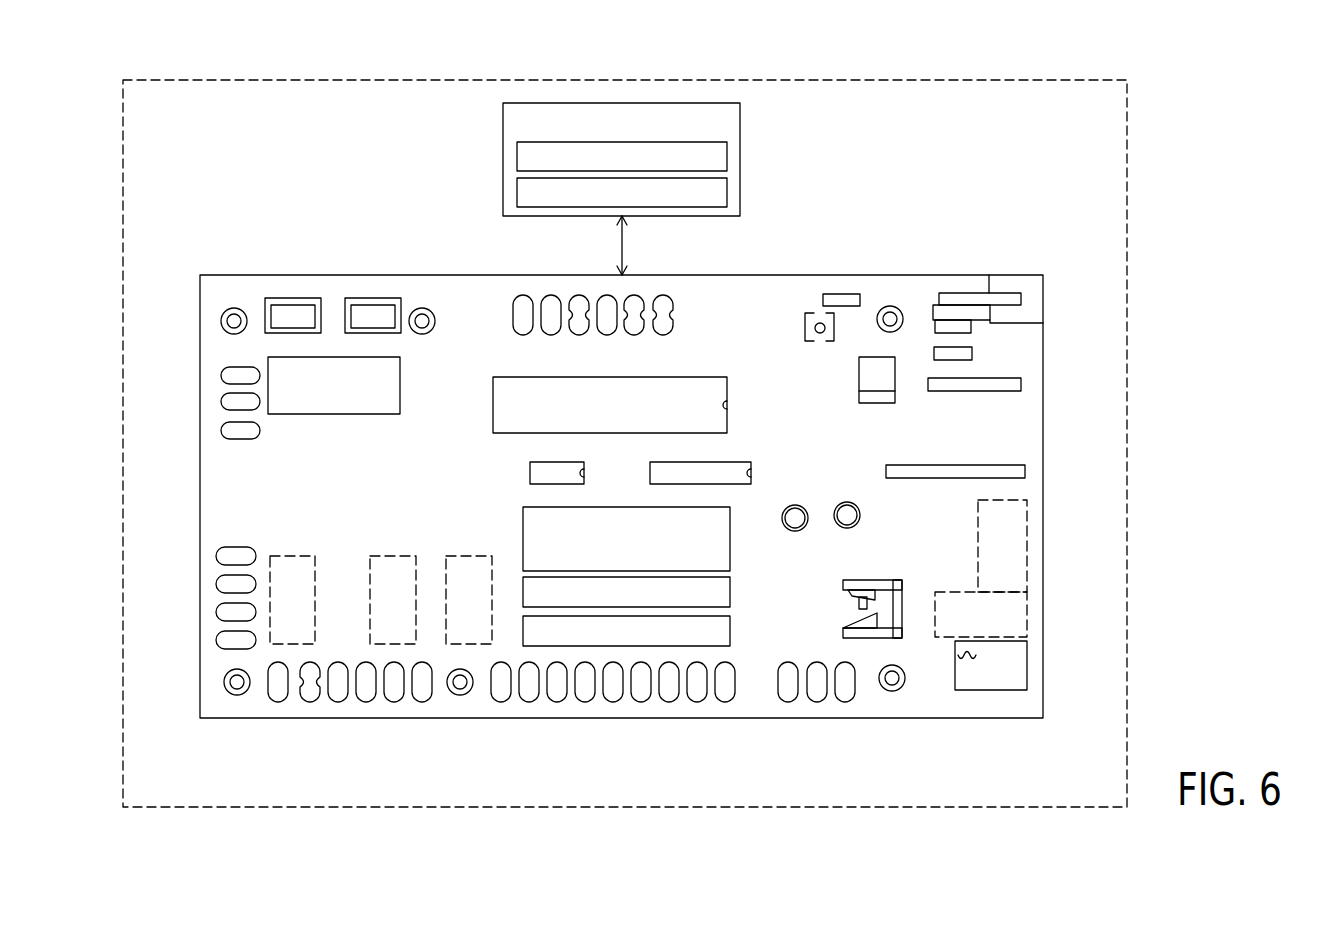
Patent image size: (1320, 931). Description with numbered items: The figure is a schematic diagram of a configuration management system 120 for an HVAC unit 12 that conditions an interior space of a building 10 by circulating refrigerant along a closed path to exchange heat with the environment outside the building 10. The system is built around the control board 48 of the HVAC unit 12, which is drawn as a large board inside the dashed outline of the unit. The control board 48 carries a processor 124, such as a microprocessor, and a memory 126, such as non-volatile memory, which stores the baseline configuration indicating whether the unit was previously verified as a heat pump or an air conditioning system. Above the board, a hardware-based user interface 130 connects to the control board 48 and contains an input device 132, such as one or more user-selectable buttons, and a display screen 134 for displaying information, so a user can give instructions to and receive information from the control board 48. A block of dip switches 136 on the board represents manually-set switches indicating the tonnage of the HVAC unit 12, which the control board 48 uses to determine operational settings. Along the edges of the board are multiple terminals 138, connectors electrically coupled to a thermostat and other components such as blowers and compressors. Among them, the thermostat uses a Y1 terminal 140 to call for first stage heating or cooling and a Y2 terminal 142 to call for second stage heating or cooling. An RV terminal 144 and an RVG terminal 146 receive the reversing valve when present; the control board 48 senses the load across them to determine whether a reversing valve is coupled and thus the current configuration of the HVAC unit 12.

The building 10 is at (460, 58).
The HVAC unit 12 is at (277, 80).
The control board 48 is at (1013, 275).
The configuration management system 120 is at (925, 200).
The processor 124 is at (730, 590).
The memory 126 is at (730, 629).
The user interface 130 is at (628, 159).
The input device 132 is at (740, 153).
The display screen 134 is at (740, 190).
The dip switches 136 is at (523, 539).
The terminals 138 is at (256, 697).
The Y1 terminal 140 is at (528, 705).
The Y2 terminal 142 is at (557, 705).
The RV terminal 144 is at (216, 639).
The RVG terminal 146 is at (216, 613).